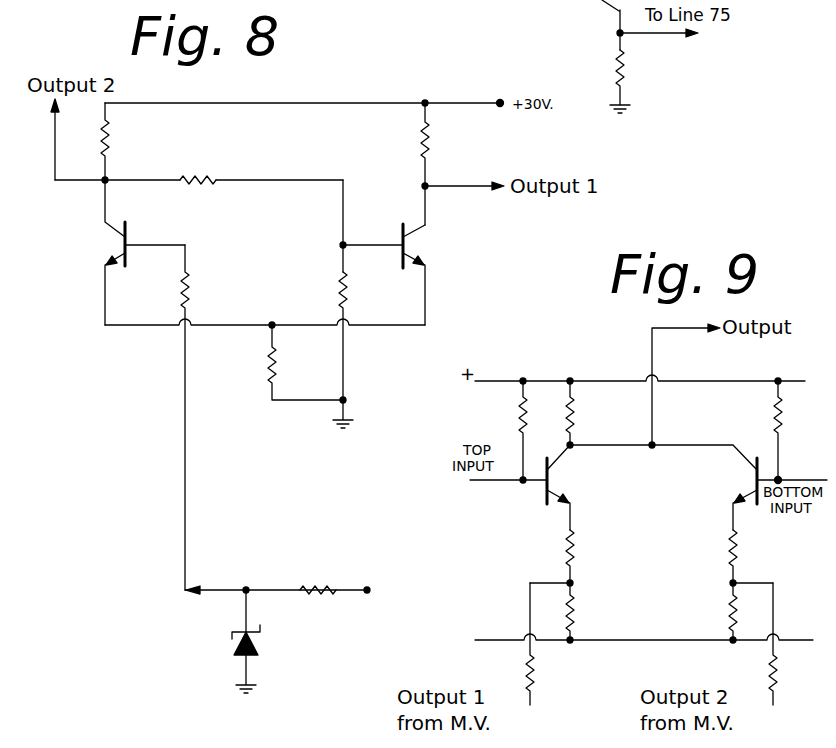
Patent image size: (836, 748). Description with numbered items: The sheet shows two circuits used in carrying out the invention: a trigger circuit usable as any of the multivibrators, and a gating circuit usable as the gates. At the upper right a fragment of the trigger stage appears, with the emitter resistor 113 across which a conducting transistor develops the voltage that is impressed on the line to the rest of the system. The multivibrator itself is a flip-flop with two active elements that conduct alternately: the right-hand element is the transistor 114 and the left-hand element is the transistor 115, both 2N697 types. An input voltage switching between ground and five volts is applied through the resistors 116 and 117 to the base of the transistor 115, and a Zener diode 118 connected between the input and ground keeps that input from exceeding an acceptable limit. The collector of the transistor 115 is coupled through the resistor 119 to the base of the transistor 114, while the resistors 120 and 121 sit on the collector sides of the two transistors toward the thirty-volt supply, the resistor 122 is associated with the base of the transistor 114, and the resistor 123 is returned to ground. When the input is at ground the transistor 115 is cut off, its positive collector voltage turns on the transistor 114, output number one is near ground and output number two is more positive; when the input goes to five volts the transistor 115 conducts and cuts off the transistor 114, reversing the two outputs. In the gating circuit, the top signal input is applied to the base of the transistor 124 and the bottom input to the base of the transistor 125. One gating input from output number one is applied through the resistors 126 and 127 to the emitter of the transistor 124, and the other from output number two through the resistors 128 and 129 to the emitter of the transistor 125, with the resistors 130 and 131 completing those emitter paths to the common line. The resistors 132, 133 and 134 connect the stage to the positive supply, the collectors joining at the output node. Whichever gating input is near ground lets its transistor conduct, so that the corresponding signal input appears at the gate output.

In FIG. 8, the emitter resistor 113 is at (626, 66).
In FIG. 8, the transistor 114 is at (410, 240).
In FIG. 8, the transistor 115 is at (118, 240).
In FIG. 8, the resistor 116 is at (314, 584).
In FIG. 8, the resistor 117 is at (191, 289).
In FIG. 8, the Zener diode 118 is at (231, 650).
In FIG. 8, the resistor 119 is at (198, 172).
In FIG. 8, the resistor 120 is at (110, 128).
In FIG. 8, the resistor 121 is at (419, 141).
In FIG. 8, the resistor 122 is at (349, 289).
In FIG. 8, the resistor 123 is at (266, 360).
In FIG. 9, the transistor 124 is at (553, 478).
In FIG. 9, the transistor 125 is at (751, 478).
In FIG. 9, the resistor 126 is at (525, 678).
In FIG. 9, the resistor 127 is at (564, 552).
In FIG. 9, the resistor 128 is at (779, 683).
In FIG. 9, the resistor 129 is at (739, 545).
In FIG. 9, the resistor 130 is at (576, 608).
In FIG. 9, the resistor 131 is at (727, 605).
In FIG. 9, the resistor 132 is at (517, 418).
In FIG. 9, the resistor 133 is at (578, 402).
In FIG. 9, the resistor 134 is at (772, 420).